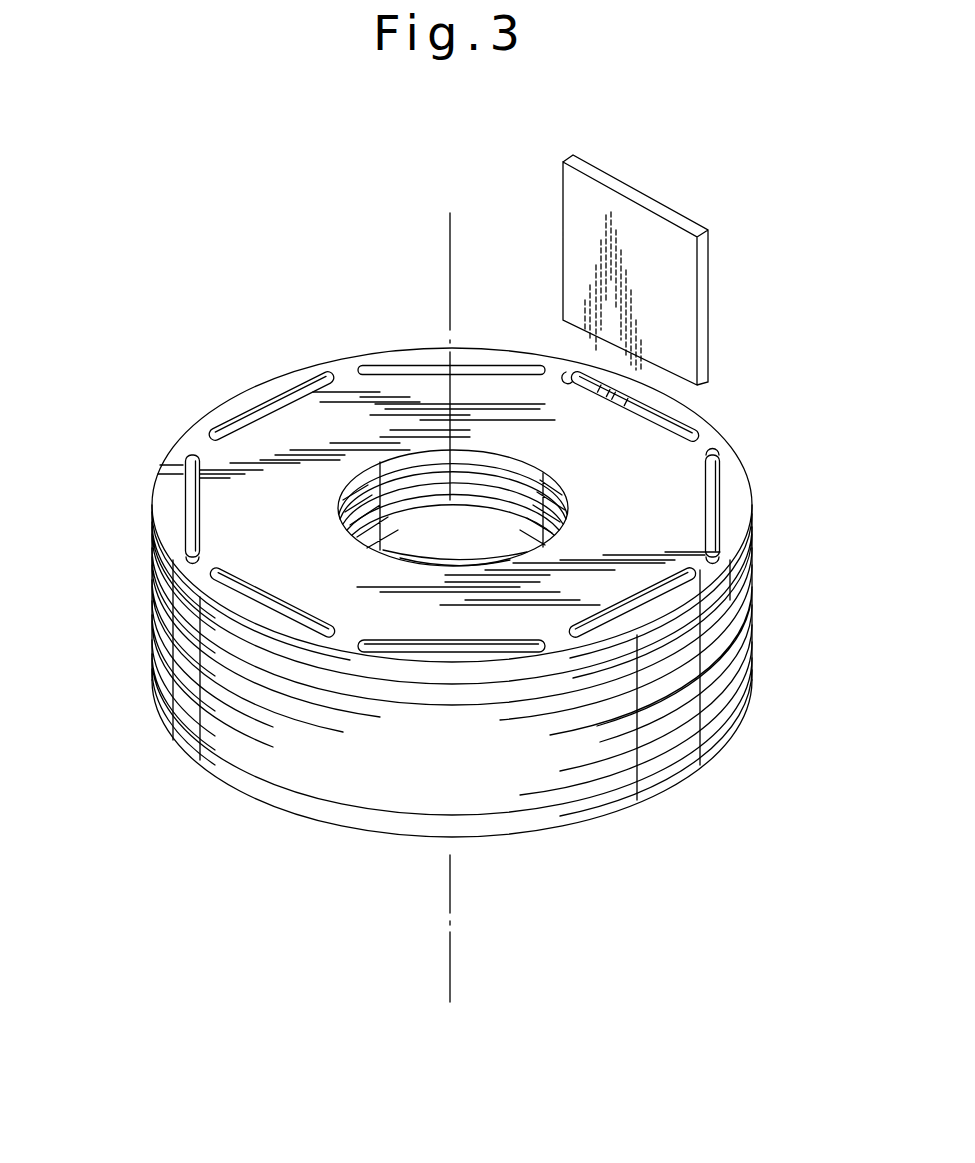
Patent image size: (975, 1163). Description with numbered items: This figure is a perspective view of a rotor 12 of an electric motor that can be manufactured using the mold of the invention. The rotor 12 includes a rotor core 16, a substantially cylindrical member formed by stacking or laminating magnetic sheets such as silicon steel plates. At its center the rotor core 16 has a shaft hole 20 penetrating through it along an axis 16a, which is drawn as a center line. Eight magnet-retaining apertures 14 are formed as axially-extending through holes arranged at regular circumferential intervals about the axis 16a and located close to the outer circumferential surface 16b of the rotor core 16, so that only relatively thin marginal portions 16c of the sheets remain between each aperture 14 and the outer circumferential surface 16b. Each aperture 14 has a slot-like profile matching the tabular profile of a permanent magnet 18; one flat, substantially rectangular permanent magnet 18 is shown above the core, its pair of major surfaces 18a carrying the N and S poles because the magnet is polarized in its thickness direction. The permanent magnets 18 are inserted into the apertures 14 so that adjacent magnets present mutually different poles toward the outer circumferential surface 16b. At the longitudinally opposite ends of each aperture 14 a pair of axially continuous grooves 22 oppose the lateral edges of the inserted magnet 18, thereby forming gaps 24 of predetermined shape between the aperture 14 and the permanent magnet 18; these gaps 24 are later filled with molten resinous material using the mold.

The rotor 12 is at (243, 294).
The magnet-retaining aperture 14 is at (690, 410).
The rotor core 16 is at (232, 784).
The axis 16a is at (450, 222).
The outer circumferential surface 16b is at (560, 768).
The marginal portion 16c is at (738, 508).
The permanent magnet 18 is at (668, 197).
The major surface 18a is at (617, 166).
The shaft hole 20 is at (386, 474).
The groove 22 is at (572, 372).
The gap 24 is at (210, 572).